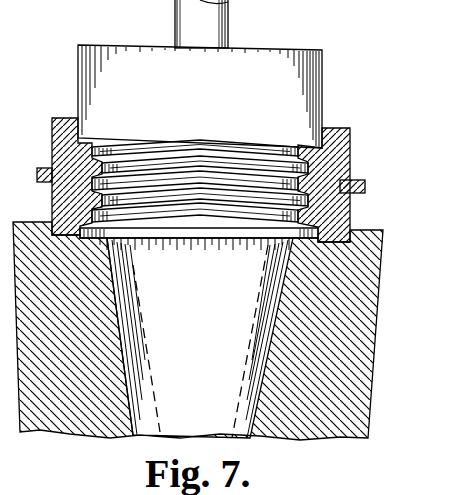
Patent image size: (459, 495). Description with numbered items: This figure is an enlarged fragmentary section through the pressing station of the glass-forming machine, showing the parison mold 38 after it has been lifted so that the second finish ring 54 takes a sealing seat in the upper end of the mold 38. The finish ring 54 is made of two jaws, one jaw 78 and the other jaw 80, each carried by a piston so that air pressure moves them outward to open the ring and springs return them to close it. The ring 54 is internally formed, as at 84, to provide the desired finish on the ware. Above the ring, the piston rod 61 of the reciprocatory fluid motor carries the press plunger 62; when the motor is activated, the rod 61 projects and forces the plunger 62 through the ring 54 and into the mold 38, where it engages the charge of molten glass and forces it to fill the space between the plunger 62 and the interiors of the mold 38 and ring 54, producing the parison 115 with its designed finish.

The second parison mold 38 is at (385, 296).
The second finish ring 54 is at (342, 107).
The piston rod 61 is at (193, 22).
The press plunger 62 is at (141, 321).
The jaw 78 is at (350, 160).
The jaw 80 is at (52, 195).
The internal finish forming surface 84 is at (308, 221).
The parison 115 is at (163, 381).